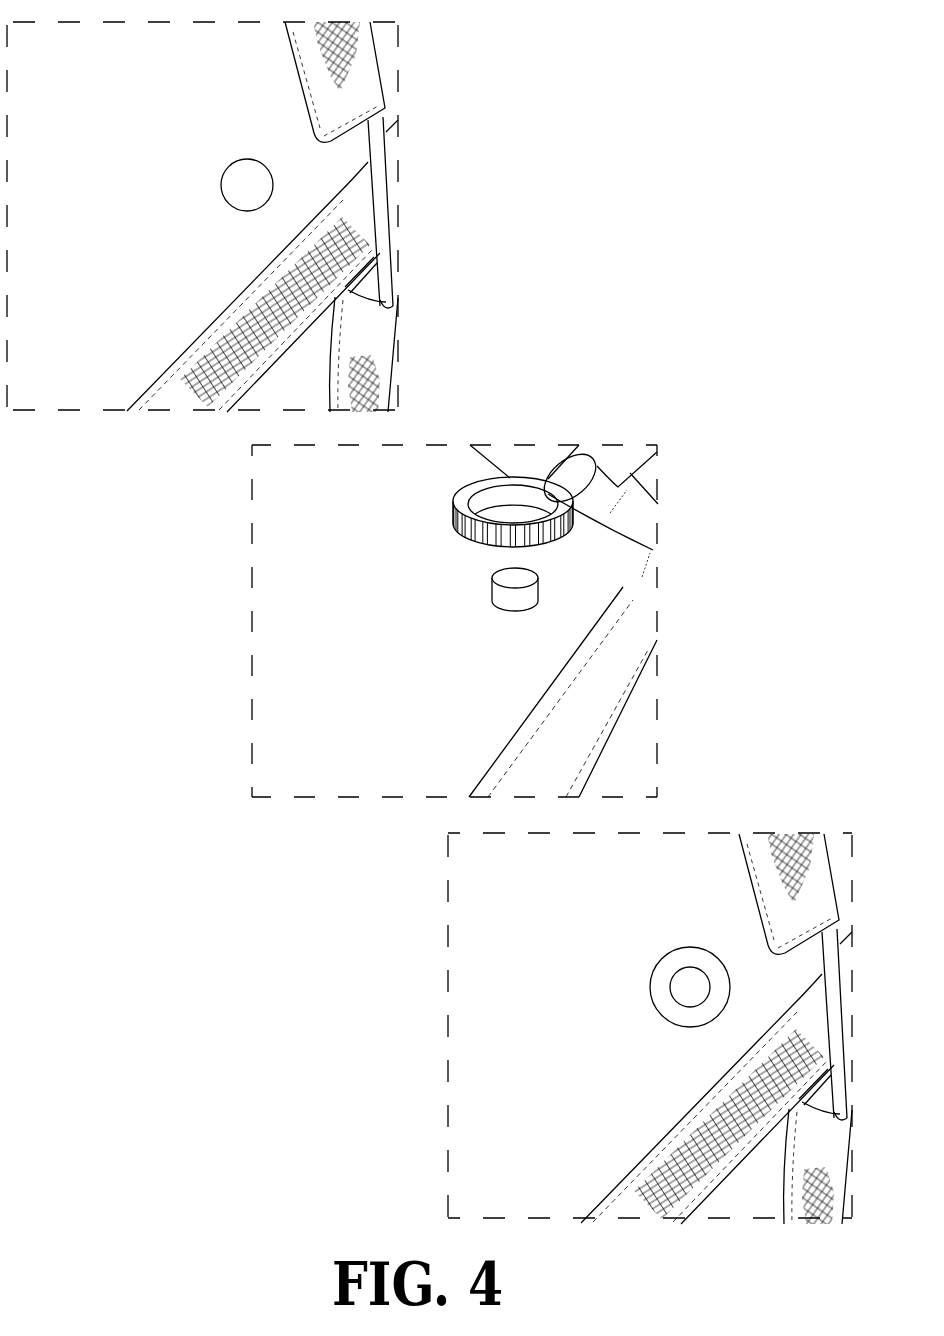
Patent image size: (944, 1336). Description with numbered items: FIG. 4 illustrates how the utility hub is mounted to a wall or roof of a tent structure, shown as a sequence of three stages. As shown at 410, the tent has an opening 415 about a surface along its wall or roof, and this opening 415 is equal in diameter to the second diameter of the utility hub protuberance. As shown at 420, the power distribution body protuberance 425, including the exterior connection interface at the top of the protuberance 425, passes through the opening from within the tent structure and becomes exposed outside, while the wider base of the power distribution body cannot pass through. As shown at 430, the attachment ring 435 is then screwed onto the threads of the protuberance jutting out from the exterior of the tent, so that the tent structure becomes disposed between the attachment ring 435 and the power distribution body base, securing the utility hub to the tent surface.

The tent opening stage 410 is at (425, 88).
The opening 415 is at (255, 187).
The protuberance insertion stage 420 is at (672, 507).
The power distribution body protuberance 425 is at (540, 594).
The attachment ring securing stage 430 is at (410, 1012).
The attachment ring 435 is at (489, 516).